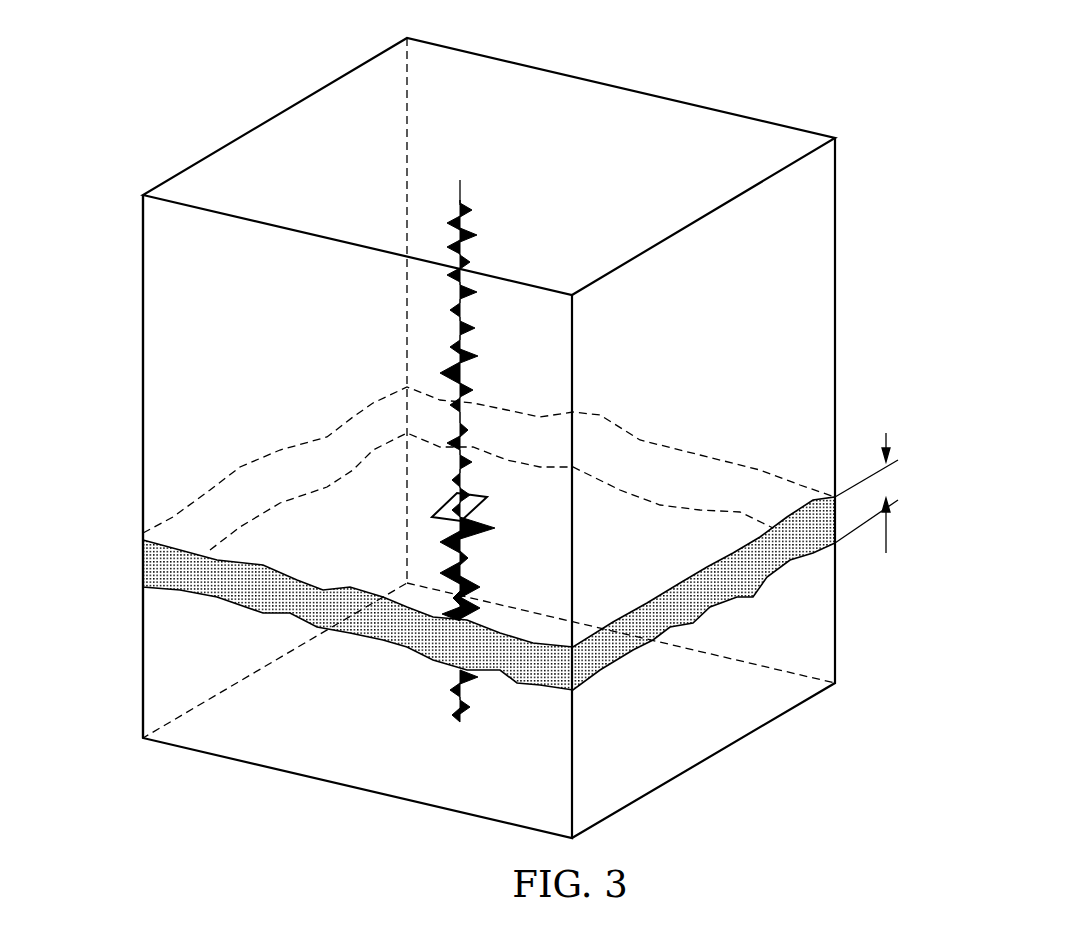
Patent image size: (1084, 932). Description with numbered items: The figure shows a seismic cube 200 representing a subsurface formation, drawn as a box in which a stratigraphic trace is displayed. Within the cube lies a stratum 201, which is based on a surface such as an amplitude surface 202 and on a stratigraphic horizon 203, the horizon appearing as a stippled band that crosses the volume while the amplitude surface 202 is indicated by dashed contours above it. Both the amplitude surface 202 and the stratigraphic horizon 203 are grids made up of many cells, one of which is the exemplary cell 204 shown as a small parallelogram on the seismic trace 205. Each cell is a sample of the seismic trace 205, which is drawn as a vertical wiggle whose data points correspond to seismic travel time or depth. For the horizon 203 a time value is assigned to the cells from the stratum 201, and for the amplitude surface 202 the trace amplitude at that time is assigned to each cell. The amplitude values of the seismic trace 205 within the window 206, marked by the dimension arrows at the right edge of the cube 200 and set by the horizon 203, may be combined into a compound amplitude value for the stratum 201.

The seismic cube 200 is at (623, 88).
The stratum 201 is at (131, 561).
The amplitude surface 202 is at (313, 551).
The stratigraphic horizon 203 is at (630, 657).
The cell 204 is at (482, 494).
The seismic trace 205 is at (462, 192).
The window 206 is at (886, 540).